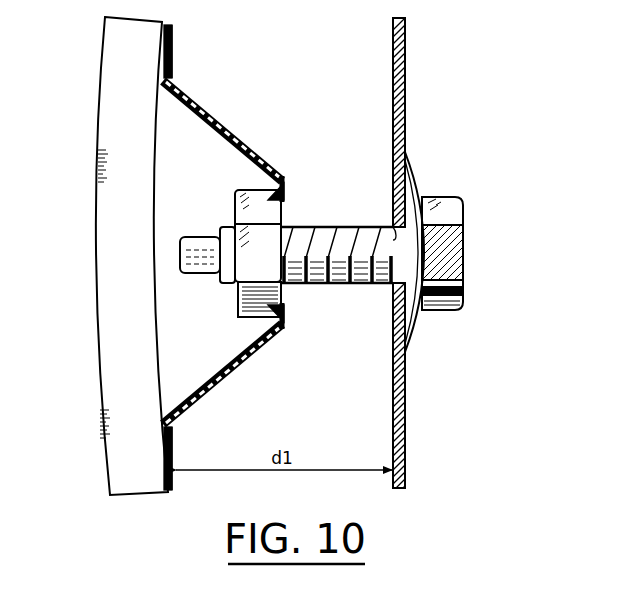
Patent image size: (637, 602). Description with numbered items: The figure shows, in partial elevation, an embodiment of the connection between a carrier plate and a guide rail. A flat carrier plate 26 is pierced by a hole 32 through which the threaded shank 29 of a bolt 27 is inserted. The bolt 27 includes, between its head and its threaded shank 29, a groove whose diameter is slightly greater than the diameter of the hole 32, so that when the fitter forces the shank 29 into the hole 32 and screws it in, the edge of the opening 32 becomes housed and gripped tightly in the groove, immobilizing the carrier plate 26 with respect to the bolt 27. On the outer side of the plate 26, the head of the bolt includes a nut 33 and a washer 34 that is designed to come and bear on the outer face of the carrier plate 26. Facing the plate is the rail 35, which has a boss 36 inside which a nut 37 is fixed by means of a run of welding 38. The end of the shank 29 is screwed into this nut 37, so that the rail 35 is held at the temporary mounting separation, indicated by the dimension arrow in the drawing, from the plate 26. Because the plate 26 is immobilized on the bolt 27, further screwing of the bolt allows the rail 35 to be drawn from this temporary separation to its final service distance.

The carrier plate 26 is at (406, 118).
The bolt 27 is at (475, 222).
The threaded shank 29 is at (330, 285).
The hole 32 is at (395, 235).
The nut 33 is at (440, 311).
The washer 34 is at (418, 342).
The rail 35 is at (99, 118).
The boss 36 is at (238, 140).
The nut 37 is at (240, 305).
The run of welding 38 is at (265, 190).